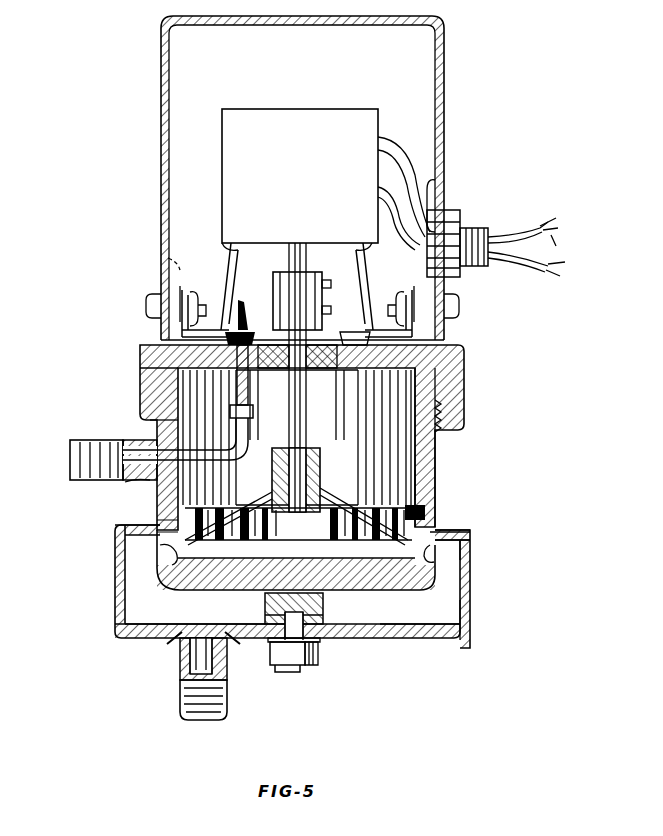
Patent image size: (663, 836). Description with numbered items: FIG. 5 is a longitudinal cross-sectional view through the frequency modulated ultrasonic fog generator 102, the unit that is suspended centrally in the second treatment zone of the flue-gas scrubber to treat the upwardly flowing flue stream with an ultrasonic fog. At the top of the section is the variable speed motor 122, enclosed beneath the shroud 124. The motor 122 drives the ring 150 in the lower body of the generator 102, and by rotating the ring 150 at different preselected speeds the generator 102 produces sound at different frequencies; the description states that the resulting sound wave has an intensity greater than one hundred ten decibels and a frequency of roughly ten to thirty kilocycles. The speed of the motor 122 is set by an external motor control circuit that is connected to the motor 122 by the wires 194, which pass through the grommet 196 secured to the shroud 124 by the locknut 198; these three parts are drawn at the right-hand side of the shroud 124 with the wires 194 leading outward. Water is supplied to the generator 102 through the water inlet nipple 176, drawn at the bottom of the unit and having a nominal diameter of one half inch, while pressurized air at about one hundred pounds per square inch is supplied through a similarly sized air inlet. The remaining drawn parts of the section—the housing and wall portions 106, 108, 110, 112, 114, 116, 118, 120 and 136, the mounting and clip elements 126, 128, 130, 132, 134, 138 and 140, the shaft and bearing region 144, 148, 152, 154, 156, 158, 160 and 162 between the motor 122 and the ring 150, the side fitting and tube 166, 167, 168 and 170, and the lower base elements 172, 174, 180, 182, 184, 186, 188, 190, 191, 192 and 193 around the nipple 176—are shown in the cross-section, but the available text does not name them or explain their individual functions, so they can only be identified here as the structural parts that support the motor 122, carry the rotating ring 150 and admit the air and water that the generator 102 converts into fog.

The frequency modulated ultrasonic fog generator 102 is at (138, 395).
The housing side wall 106 is at (440, 441).
The lower sump housing 108 is at (470, 591).
The flange 110 is at (442, 532).
The wall portion 112 is at (436, 482).
The cup bottom 114 is at (208, 590).
The threaded joint 116 is at (432, 456).
The wall step 118 is at (157, 424).
The top flange 120 is at (150, 372).
The variable speed motor 122 is at (302, 162).
The shroud 124 is at (447, 96).
The bracket foot 126 is at (225, 296).
The bracket leg 128 is at (297, 286).
The clip 130 is at (482, 341).
The clip arm 132 is at (185, 290).
The clip tab 134 is at (310, 303).
The cover bottom edge 136 is at (166, 342).
The screw 138 is at (160, 300).
The cover seam 140 is at (168, 266).
The drive shaft coupling 144 is at (298, 244).
The bearing 148 is at (300, 392).
The ring 150 is at (355, 500).
The stator core 152 is at (322, 470).
The rotor hub 154 is at (280, 448).
The stator windings 156 is at (312, 442).
The commutator 158 is at (215, 510).
The brush 160 is at (428, 510).
The gap 162 is at (176, 532).
The handle 166 is at (82, 442).
The handle stem 167 is at (122, 482).
The tube 168 is at (248, 388).
The seal 170 is at (168, 560).
The bottom plate 172 is at (420, 640).
The bottom plate left portion 174 is at (198, 624).
The water inlet nipple 176 is at (227, 704).
The side wall 180 is at (470, 616).
The rim 182 is at (472, 534).
The sump chamber 184 is at (405, 625).
The flange edge 186 is at (118, 534).
The bolt boss 188 is at (324, 608).
The nut 190 is at (284, 672).
The washer 191 is at (268, 620).
The lock washer 192 is at (322, 644).
The nut thread 193 is at (318, 664).
The wires 194 is at (560, 240).
The grommet 196 is at (440, 186).
The locknut 198 is at (462, 216).